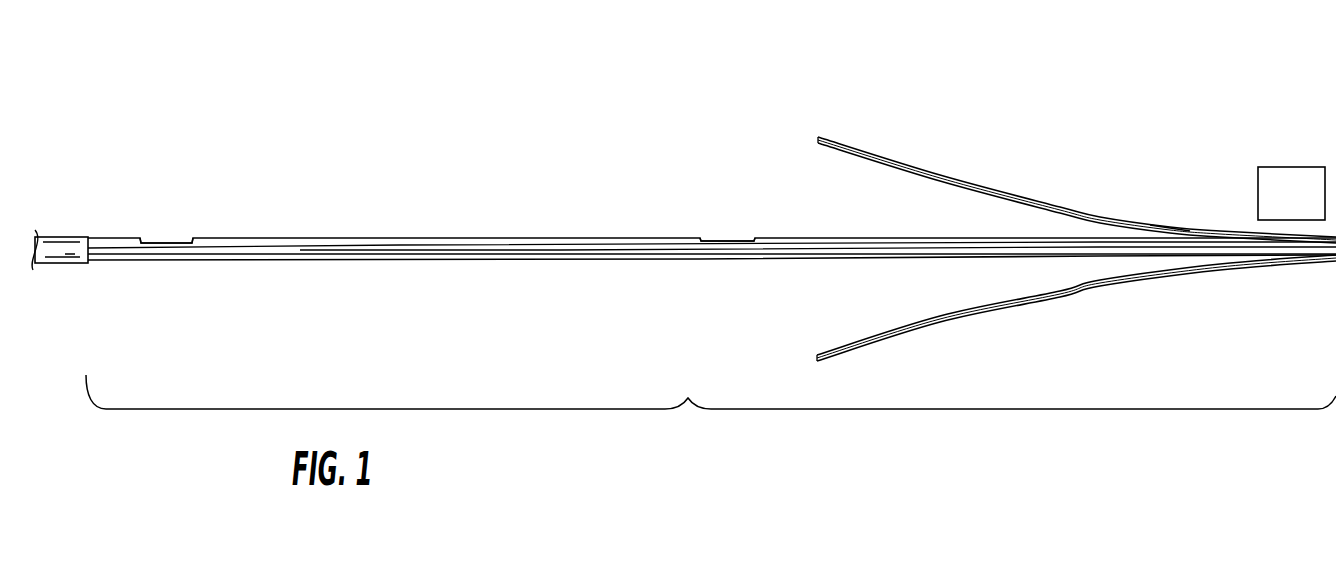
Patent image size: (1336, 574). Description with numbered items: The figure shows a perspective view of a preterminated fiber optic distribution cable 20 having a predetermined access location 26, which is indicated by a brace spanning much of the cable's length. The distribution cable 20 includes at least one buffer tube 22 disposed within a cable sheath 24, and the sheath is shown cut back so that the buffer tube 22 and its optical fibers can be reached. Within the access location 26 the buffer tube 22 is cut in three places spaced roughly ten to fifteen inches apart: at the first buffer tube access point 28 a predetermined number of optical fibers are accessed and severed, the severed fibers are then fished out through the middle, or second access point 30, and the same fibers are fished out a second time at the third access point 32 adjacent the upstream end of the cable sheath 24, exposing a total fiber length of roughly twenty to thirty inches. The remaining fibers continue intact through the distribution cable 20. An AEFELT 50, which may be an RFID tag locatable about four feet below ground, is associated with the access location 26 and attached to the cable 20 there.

The fiber optic distribution cable 20 is at (494, 105).
The buffer tube 22 is at (265, 246).
The cable sheath 24 is at (63, 243).
The access location 26 is at (711, 418).
The first buffer tube access point 28 is at (1170, 228).
The second access point 30 is at (725, 237).
The third access point 32 is at (165, 238).
The AEFELT 50 is at (1291, 193).